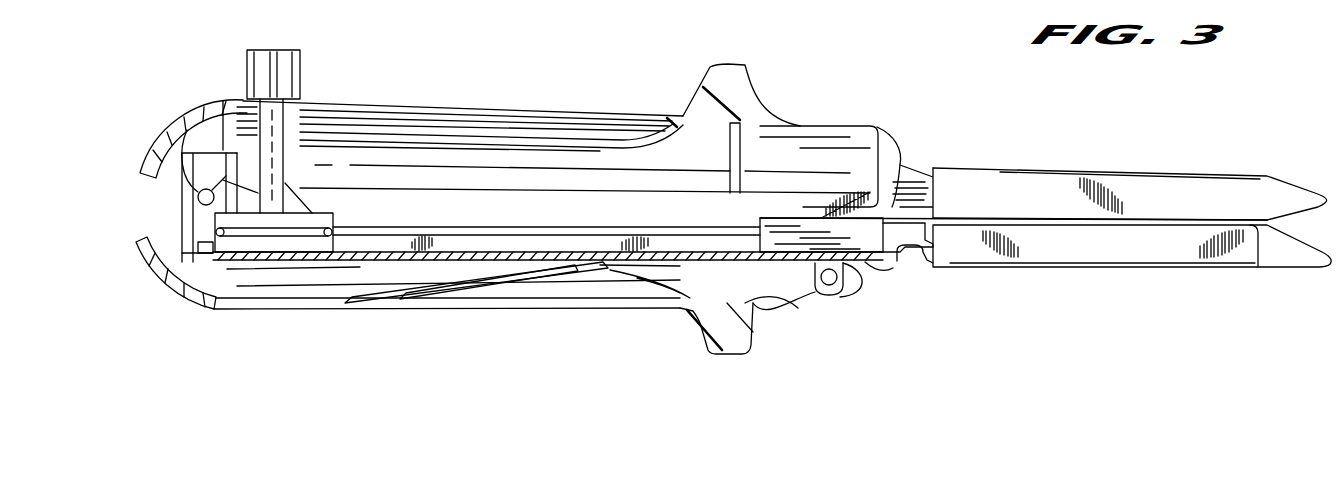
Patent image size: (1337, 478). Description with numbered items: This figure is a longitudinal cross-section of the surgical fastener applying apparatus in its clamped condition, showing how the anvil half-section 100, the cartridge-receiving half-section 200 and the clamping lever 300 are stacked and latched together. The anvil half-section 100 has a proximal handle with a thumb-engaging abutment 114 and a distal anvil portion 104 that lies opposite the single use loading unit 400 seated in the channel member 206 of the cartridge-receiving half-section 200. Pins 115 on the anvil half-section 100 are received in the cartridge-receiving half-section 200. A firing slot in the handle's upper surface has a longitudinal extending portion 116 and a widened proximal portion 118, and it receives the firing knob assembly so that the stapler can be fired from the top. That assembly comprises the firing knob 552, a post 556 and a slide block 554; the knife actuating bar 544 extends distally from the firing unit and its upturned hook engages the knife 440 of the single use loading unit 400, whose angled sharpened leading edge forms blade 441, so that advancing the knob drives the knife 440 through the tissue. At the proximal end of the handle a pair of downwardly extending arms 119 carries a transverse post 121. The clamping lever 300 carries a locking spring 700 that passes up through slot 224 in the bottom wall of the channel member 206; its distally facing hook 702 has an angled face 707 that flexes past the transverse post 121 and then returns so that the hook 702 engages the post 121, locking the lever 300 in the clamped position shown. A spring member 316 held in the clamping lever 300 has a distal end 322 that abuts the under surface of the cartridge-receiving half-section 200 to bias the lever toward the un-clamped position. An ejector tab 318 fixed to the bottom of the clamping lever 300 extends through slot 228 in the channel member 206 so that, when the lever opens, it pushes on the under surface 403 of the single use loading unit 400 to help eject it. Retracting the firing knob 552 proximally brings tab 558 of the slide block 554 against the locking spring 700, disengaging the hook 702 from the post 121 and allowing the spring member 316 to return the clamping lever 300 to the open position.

The anvil half-section 100 is at (940, 142).
The distal anvil portion 104 is at (1150, 183).
The thumb-engaging abutment 114 is at (707, 90).
The pins 115 is at (832, 283).
The longitudinal extending portion 116 is at (413, 110).
The widened proximal portion 118 is at (303, 103).
The arms 119 is at (210, 130).
The transverse post 121 is at (197, 203).
The cartridge-receiving half-section 200 is at (1028, 314).
The channel member 206 is at (1152, 250).
The slot 224 is at (207, 253).
The slot 228 is at (820, 228).
The clamping lever 300 is at (753, 343).
The spring member 316 is at (487, 281).
The ejector tab 318 is at (870, 278).
The distal end of spring member 322 is at (573, 268).
The single use loading unit 400 is at (1045, 220).
The under surface 403 is at (927, 265).
The knife 440 is at (840, 193).
The blade 441 is at (900, 193).
The knife actuating bar 544 is at (560, 222).
The firing knob 552 is at (272, 55).
The slide block 554 is at (278, 252).
The post 556 is at (300, 153).
The tab 558 is at (188, 298).
The locking spring 700 is at (183, 253).
The hook 702 is at (178, 158).
The angled face 707 is at (166, 133).